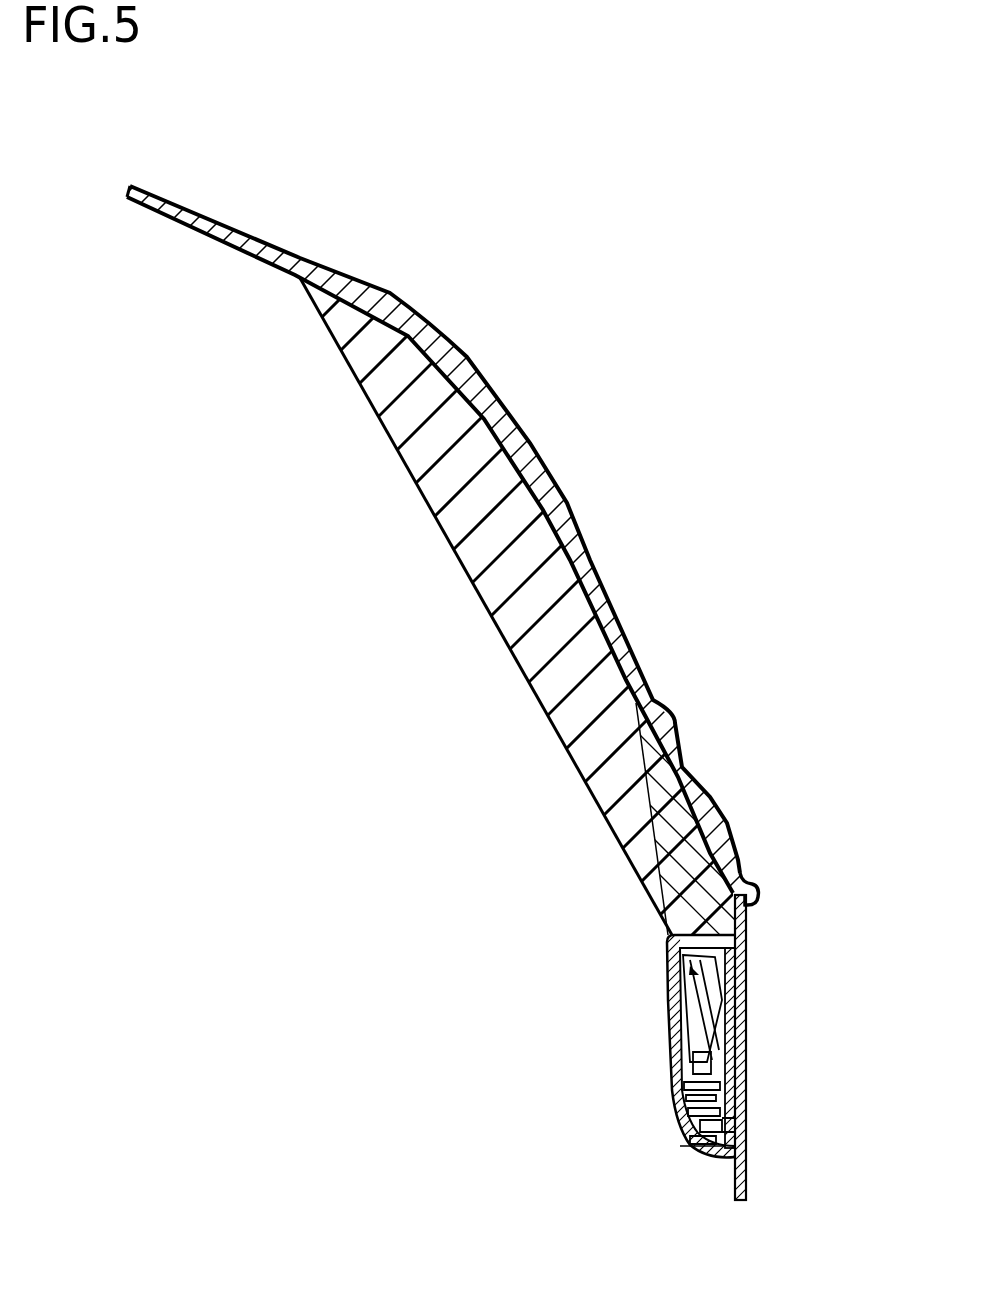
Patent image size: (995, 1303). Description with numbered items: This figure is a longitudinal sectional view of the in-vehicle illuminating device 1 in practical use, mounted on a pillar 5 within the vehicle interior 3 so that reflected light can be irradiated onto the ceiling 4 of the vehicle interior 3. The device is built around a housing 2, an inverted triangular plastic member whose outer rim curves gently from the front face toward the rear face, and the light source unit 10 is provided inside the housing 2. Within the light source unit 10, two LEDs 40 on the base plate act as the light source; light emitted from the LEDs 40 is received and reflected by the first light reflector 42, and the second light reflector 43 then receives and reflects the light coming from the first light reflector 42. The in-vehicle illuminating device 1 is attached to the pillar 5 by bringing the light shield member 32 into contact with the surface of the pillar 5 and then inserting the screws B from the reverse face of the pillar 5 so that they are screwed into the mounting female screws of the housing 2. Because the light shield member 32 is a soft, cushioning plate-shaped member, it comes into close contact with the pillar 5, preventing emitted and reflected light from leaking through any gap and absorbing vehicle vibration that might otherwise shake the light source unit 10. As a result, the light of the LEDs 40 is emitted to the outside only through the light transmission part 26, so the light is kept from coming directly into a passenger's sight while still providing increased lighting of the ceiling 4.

The in-vehicle illuminating device 1 is at (630, 1064).
The housing 2 is at (677, 1090).
The vehicle interior 3 is at (273, 894).
The ceiling 4 is at (567, 565).
The pillar 5 is at (735, 1172).
The light source unit 10 is at (668, 965).
The light transmission part 26 is at (757, 897).
The light shield member 32 is at (745, 992).
The LEDs 40 is at (668, 997).
The first light reflector 42 is at (668, 1020).
The second light reflector 43 is at (696, 970).
The screws B is at (742, 1125).